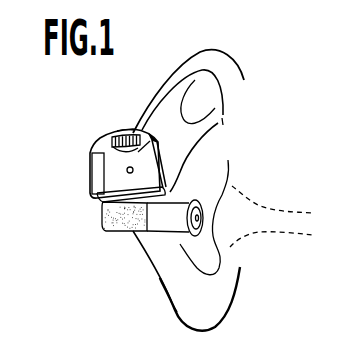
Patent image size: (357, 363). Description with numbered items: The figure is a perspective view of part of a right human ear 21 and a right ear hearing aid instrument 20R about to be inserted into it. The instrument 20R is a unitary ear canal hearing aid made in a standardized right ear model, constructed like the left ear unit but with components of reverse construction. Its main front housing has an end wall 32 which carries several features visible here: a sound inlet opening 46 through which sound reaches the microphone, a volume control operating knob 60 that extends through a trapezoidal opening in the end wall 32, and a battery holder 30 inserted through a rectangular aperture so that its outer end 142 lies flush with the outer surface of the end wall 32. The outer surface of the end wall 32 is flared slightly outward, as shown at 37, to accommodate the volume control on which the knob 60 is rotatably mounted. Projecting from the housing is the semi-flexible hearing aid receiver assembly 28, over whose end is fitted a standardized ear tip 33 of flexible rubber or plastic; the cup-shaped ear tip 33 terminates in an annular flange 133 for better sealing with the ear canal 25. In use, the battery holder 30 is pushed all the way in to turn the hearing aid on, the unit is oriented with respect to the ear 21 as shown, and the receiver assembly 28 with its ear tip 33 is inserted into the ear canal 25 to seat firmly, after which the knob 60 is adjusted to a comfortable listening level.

The right ear hearing aid instrument 20R is at (96, 215).
The ear 21 is at (177, 301).
The ear canal 25 is at (290, 234).
The hearing aid receiver assembly 28 is at (125, 232).
The battery holder 30 is at (97, 177).
The end wall 32 is at (124, 180).
The ear tip 33 is at (171, 229).
The flared portion of end wall 37 is at (128, 166).
The sound inlet opening 46 is at (133, 170).
The volume control operating knob 60 is at (125, 134).
The annular flange 133 is at (193, 197).
The outer end of battery holder 142 is at (92, 166).